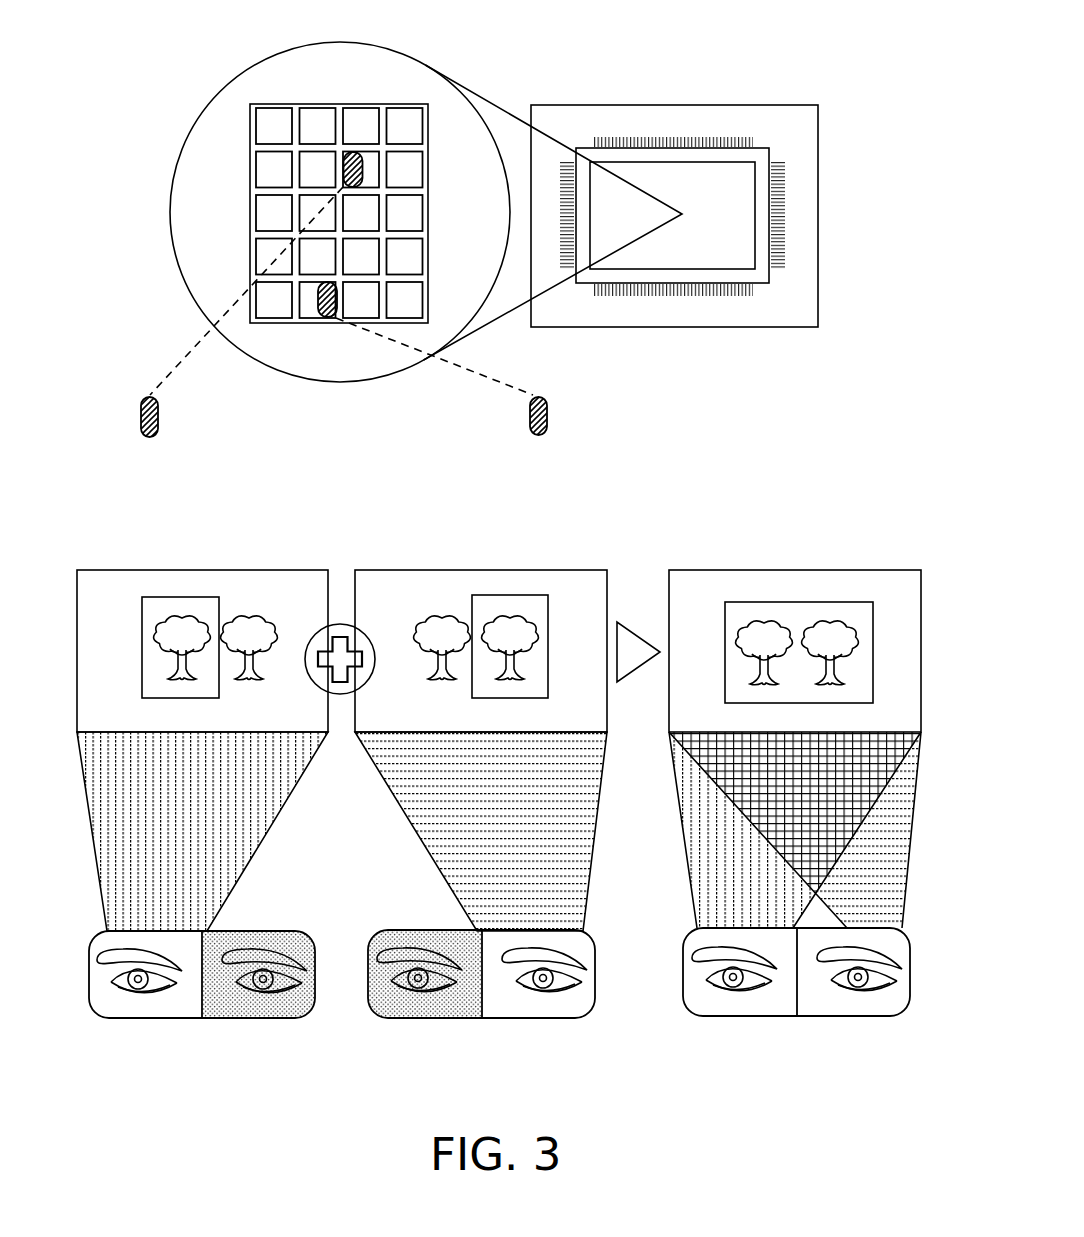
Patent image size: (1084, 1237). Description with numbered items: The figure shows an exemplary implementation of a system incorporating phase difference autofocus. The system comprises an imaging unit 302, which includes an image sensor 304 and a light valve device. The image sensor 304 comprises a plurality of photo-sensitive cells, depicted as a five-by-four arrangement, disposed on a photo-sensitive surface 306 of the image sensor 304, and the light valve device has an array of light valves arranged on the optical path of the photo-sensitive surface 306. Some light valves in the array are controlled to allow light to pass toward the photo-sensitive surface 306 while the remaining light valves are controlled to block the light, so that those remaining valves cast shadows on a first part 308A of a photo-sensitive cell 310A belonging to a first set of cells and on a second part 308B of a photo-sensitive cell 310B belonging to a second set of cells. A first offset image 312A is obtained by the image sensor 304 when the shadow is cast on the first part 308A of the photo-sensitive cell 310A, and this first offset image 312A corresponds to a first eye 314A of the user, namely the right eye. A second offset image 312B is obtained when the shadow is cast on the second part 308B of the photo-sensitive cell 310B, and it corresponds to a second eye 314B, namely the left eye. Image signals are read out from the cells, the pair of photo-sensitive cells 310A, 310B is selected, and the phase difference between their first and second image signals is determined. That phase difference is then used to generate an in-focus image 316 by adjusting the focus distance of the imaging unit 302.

The imaging unit 302 is at (798, 83).
The image sensor 304 is at (725, 317).
The photo-sensitive surface 306 is at (250, 192).
The first part 308A is at (160, 410).
The second part 308B is at (547, 410).
The photo-sensitive cell 310A is at (373, 139).
The photo-sensitive cell 310B is at (320, 325).
The first offset image 312A is at (315, 713).
The second offset image 312B is at (600, 713).
The first eye 314A is at (125, 995).
The second eye 314B is at (542, 997).
The image 316 is at (773, 580).